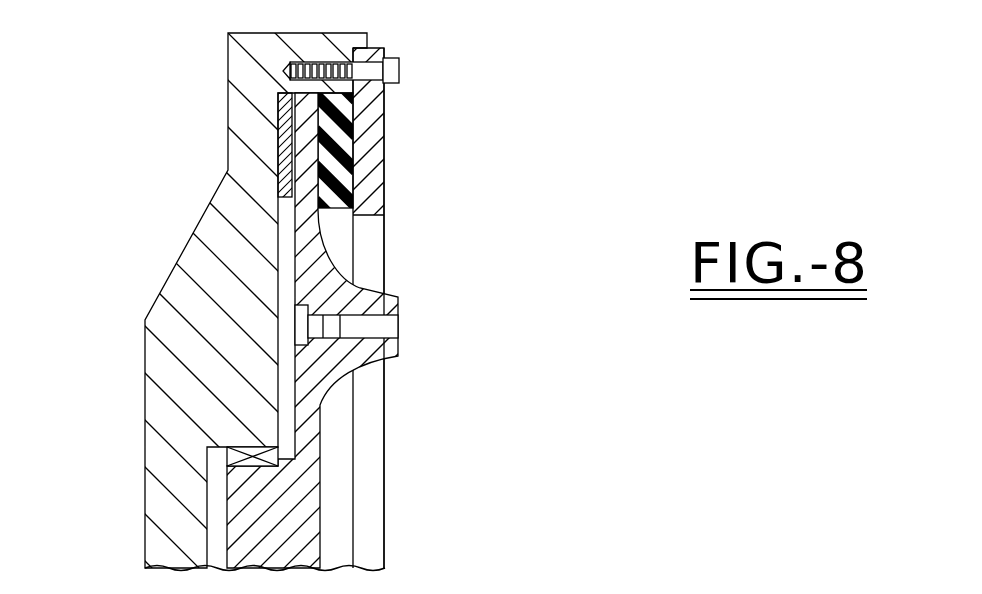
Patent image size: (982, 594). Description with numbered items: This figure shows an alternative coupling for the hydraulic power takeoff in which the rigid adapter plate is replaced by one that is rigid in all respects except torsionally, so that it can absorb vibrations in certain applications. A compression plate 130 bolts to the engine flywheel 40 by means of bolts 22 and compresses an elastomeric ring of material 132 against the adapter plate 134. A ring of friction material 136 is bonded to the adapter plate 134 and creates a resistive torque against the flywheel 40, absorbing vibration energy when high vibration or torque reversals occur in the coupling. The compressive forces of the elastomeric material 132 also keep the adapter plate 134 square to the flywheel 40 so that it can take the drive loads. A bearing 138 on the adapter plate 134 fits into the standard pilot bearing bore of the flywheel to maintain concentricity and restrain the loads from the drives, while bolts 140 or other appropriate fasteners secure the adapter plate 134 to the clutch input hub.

The bolts 22 is at (398, 63).
The flywheel 40 is at (192, 257).
The compression plate 130 is at (384, 149).
The elastomeric ring of material 132 is at (333, 205).
The adapter plate 134 is at (360, 289).
The ring of friction material 136 is at (287, 157).
The bearing 138 is at (255, 465).
The bolts 140 is at (378, 328).